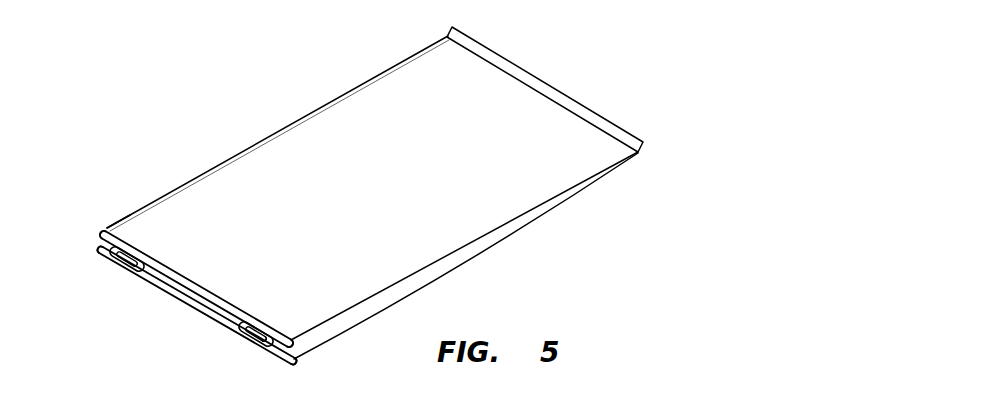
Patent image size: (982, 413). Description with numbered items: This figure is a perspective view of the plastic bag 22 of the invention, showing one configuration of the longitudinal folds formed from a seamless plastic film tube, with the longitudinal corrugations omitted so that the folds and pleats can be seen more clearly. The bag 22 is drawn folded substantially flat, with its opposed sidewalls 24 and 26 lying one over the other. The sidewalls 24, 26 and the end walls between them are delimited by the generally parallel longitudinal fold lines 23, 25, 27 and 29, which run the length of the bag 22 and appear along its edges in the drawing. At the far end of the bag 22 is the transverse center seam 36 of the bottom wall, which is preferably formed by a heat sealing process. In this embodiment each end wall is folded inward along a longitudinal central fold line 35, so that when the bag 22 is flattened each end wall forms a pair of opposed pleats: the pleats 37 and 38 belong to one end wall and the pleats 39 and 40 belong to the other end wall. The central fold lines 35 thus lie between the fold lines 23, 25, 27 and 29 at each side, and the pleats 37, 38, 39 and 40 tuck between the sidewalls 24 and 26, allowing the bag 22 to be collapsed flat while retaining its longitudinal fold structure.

The plastic bag 22 is at (237, 146).
The longitudinal fold line 23 is at (97, 248).
The sidewall 24 is at (190, 318).
The longitudinal fold line 25 is at (293, 362).
The sidewall 26 is at (195, 281).
The longitudinal fold line 27 is at (302, 340).
The longitudinal fold line 29 is at (100, 233).
The longitudinal central fold line 35 is at (140, 270).
The transverse center seam 36 is at (613, 132).
The pleat 37 is at (258, 327).
The pleat 38 is at (272, 345).
The pleat 39 is at (110, 228).
The pleat 40 is at (127, 258).